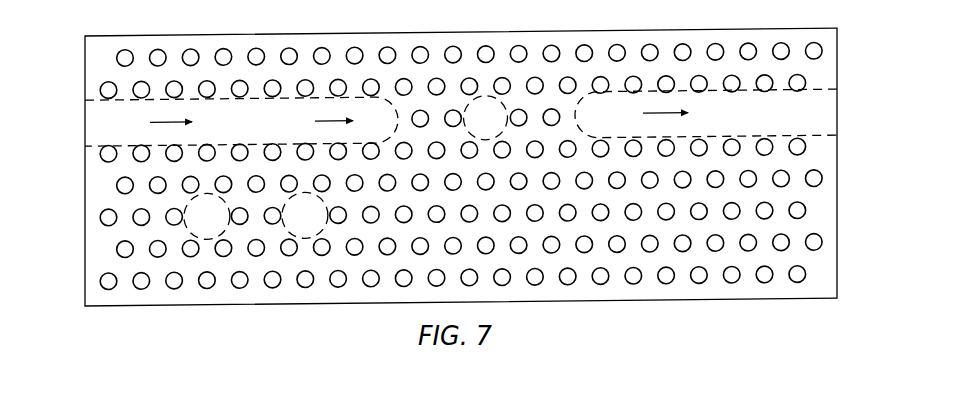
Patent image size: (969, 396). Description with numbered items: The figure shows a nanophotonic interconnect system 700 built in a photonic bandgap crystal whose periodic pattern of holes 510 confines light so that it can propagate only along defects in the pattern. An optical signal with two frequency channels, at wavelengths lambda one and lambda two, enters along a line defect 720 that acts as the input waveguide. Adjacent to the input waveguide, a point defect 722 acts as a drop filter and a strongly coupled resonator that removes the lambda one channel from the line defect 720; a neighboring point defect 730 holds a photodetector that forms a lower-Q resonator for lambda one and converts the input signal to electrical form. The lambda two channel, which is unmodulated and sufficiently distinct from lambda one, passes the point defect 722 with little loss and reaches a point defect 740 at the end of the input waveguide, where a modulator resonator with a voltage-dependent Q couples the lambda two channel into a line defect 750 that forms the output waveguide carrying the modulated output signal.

The nanophotonic interconnect system 700 is at (246, 35).
The holes 510 is at (104, 158).
The line defect 720 is at (256, 134).
The point defect 722 is at (184, 223).
The point defect 730 is at (323, 226).
The point defect 740 is at (503, 132).
The line defect 750 is at (725, 130).